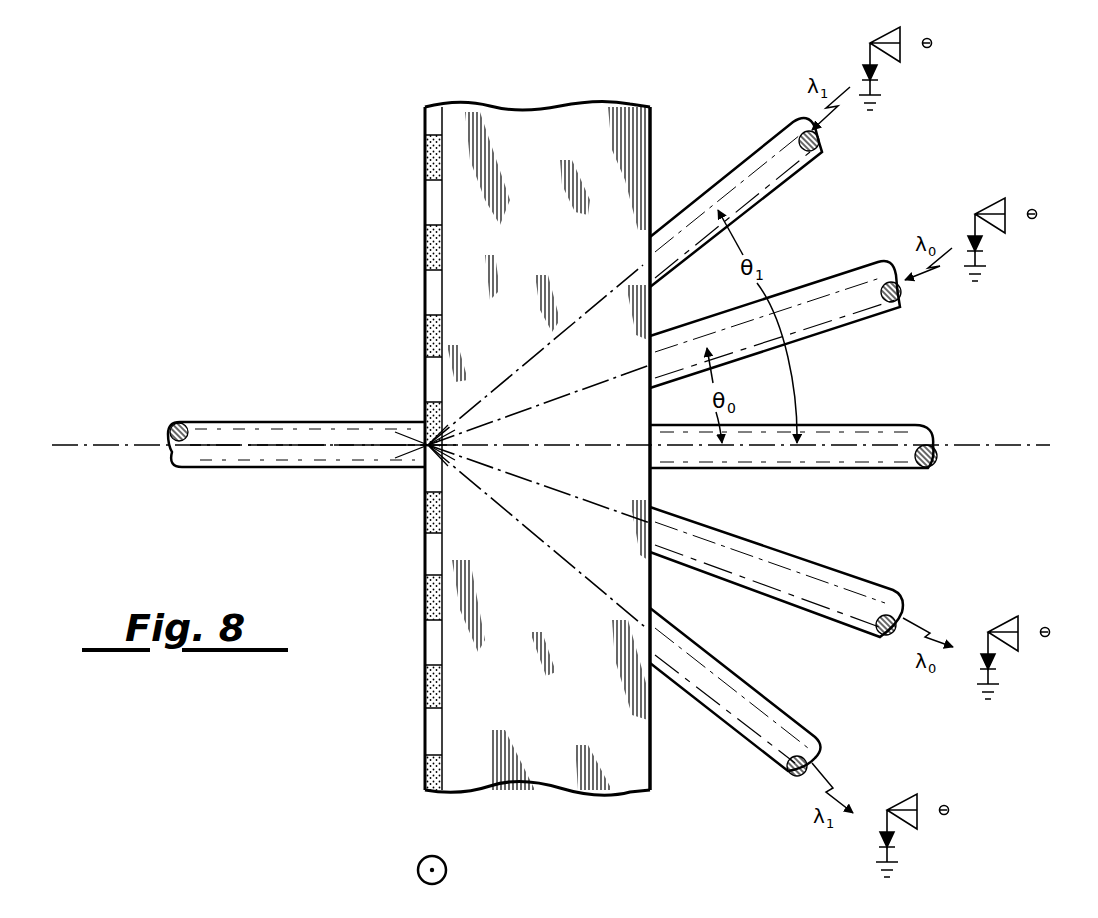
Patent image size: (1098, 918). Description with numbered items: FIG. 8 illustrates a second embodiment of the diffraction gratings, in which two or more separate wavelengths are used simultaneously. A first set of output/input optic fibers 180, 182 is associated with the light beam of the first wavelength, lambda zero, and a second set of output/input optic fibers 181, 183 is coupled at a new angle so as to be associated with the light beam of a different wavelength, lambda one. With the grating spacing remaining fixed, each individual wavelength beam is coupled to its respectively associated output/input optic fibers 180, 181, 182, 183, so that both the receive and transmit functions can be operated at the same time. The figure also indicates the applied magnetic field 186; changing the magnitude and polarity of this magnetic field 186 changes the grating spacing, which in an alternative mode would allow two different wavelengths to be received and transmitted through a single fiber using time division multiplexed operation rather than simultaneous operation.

The output/input optic fiber 180 is at (840, 578).
The output/input optic fiber 181 is at (780, 712).
The output/input optic fiber 182 is at (848, 278).
The output/input optic fiber 183 is at (757, 150).
The applied magnetic field 186 is at (445, 879).